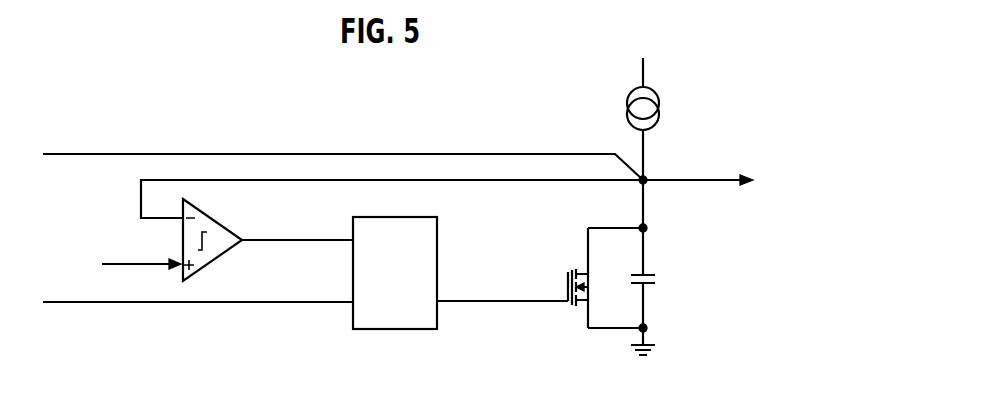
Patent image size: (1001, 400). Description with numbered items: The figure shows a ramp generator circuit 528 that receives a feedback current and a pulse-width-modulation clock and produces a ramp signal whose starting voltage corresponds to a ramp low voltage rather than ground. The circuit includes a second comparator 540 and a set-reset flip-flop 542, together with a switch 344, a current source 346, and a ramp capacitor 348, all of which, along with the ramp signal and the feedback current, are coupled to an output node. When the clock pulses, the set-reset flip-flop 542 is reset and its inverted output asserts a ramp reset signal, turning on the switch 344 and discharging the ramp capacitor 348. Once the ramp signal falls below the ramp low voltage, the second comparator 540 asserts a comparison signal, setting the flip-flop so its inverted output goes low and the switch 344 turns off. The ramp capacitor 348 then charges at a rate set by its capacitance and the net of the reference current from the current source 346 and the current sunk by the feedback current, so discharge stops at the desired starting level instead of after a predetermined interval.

The ramp generator circuit 528 is at (92, 96).
The second comparator 540 is at (213, 262).
The set-reset flip-flop 542 is at (391, 330).
The switch 344 is at (568, 272).
The current source 346 is at (626, 104).
The ramp capacitor 348 is at (655, 283).